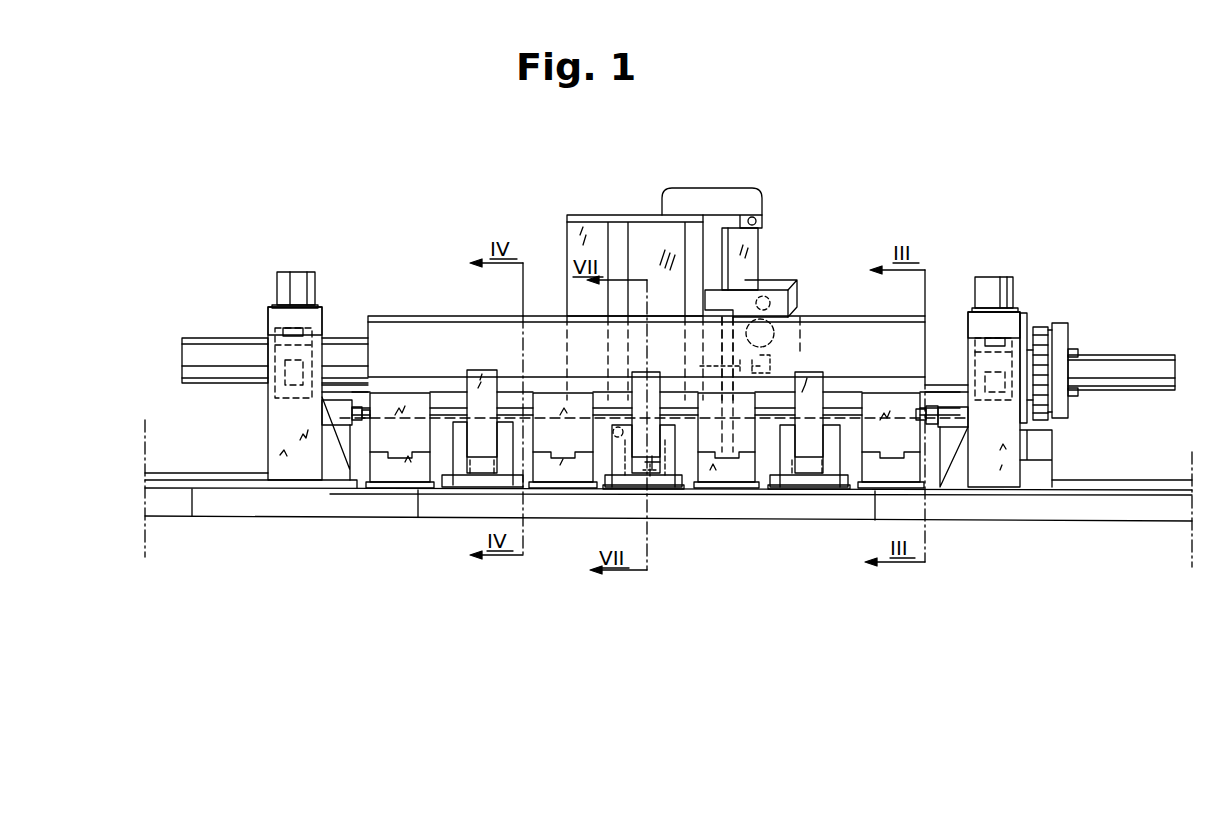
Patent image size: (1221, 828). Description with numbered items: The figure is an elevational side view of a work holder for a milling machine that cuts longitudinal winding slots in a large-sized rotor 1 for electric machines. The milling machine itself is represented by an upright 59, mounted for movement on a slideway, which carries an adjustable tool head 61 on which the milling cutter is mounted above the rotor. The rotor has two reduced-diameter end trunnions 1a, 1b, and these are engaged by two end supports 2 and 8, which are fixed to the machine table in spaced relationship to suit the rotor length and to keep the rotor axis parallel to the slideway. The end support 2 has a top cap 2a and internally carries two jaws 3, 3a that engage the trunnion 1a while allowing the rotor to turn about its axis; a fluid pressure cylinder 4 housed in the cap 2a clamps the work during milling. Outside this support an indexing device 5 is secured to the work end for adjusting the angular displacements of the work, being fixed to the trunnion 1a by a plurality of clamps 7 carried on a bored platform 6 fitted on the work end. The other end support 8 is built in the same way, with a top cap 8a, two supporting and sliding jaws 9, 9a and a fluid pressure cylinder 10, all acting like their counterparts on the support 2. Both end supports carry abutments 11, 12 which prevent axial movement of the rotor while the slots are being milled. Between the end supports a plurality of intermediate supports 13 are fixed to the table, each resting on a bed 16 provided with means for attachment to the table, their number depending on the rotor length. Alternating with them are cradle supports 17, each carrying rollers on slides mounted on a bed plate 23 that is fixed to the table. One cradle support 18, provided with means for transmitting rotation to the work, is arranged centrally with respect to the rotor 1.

The rotor 1 is at (823, 323).
The end trunnion 1a is at (1131, 358).
The end trunnion 1b is at (195, 345).
The end support 2 is at (990, 478).
The top cap 2a is at (1000, 319).
The jaw 3 is at (968, 383).
The jaw 3a is at (968, 358).
The fluid pressure cylinder 4 is at (985, 297).
The indexing device 5 is at (1041, 330).
The bored platform 6 is at (1061, 330).
The clamps 7 is at (1074, 352).
The end support 8 is at (286, 472).
The top cap 8a is at (315, 316).
The supporting and sliding jaw 9 is at (273, 372).
The supporting and sliding jaw 9a is at (268, 340).
The fluid pressure cylinder 10 is at (285, 292).
The abutment 11 is at (950, 420).
The abutment 12 is at (340, 413).
The intermediate support 13 is at (383, 478).
The bed 16 is at (405, 486).
The cradle support 17 is at (473, 468).
The cradle support 18 is at (648, 463).
The bed plate 23 is at (635, 487).
The upright 59 is at (638, 230).
The tool head 61 is at (750, 300).